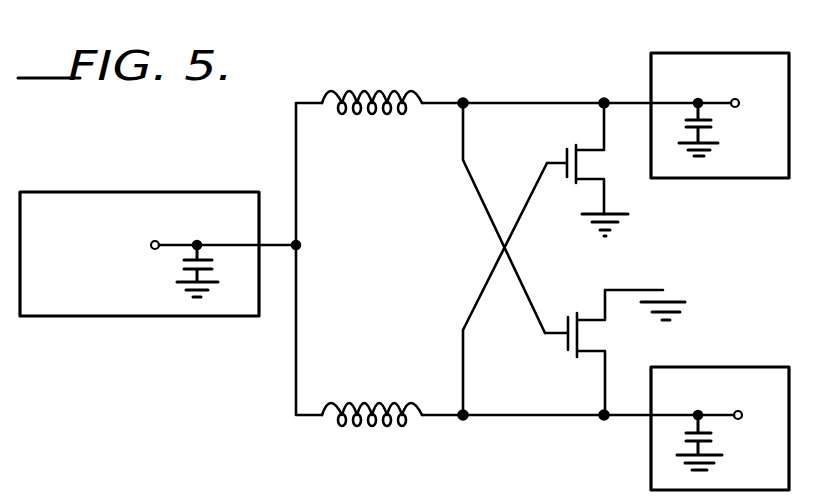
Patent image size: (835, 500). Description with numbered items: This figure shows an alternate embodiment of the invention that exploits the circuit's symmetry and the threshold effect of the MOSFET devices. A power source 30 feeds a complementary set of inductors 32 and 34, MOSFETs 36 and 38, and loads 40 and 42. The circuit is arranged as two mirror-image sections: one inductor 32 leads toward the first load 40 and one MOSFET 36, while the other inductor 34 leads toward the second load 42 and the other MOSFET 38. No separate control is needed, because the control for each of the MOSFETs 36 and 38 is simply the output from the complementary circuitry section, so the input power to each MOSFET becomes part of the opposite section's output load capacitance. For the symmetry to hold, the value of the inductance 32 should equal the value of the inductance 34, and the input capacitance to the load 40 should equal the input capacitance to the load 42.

The power source 30 is at (163, 192).
The inductor 32 is at (381, 92).
The inductor 34 is at (379, 400).
The MOSFET 36 is at (575, 146).
The MOSFET 38 is at (574, 312).
The load 40 is at (737, 53).
The load 42 is at (740, 367).